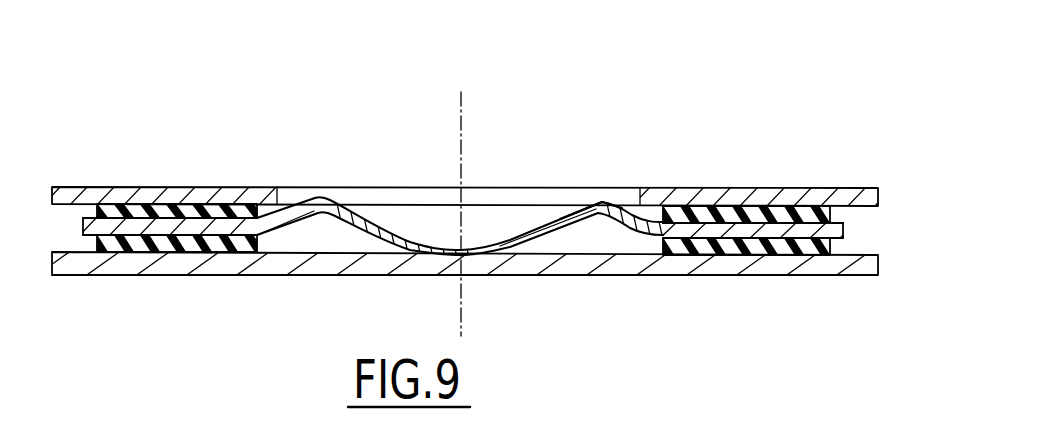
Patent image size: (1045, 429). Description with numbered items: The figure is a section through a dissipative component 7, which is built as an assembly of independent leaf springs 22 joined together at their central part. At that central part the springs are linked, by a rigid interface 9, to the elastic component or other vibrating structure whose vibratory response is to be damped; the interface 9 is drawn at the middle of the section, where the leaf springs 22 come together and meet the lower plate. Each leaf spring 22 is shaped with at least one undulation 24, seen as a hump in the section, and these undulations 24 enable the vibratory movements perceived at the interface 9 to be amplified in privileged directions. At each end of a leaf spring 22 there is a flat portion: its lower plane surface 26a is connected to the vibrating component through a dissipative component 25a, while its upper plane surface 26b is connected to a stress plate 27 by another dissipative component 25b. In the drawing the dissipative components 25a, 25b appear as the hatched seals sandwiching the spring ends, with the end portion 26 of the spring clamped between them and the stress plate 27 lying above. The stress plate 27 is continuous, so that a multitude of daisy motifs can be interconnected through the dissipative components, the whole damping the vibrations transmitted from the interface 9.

The dissipative component 7 is at (262, 85).
The rigid interface 9 is at (468, 259).
The leaf spring 22 is at (383, 232).
The undulation 24 is at (603, 198).
The dissipative component 25a is at (188, 245).
The dissipative component 25b is at (189, 214).
The intermediate ring 26 is at (768, 238).
The lower plane surface 26a is at (835, 241).
The upper plane surface 26b is at (833, 214).
The stress plate 27 is at (826, 196).